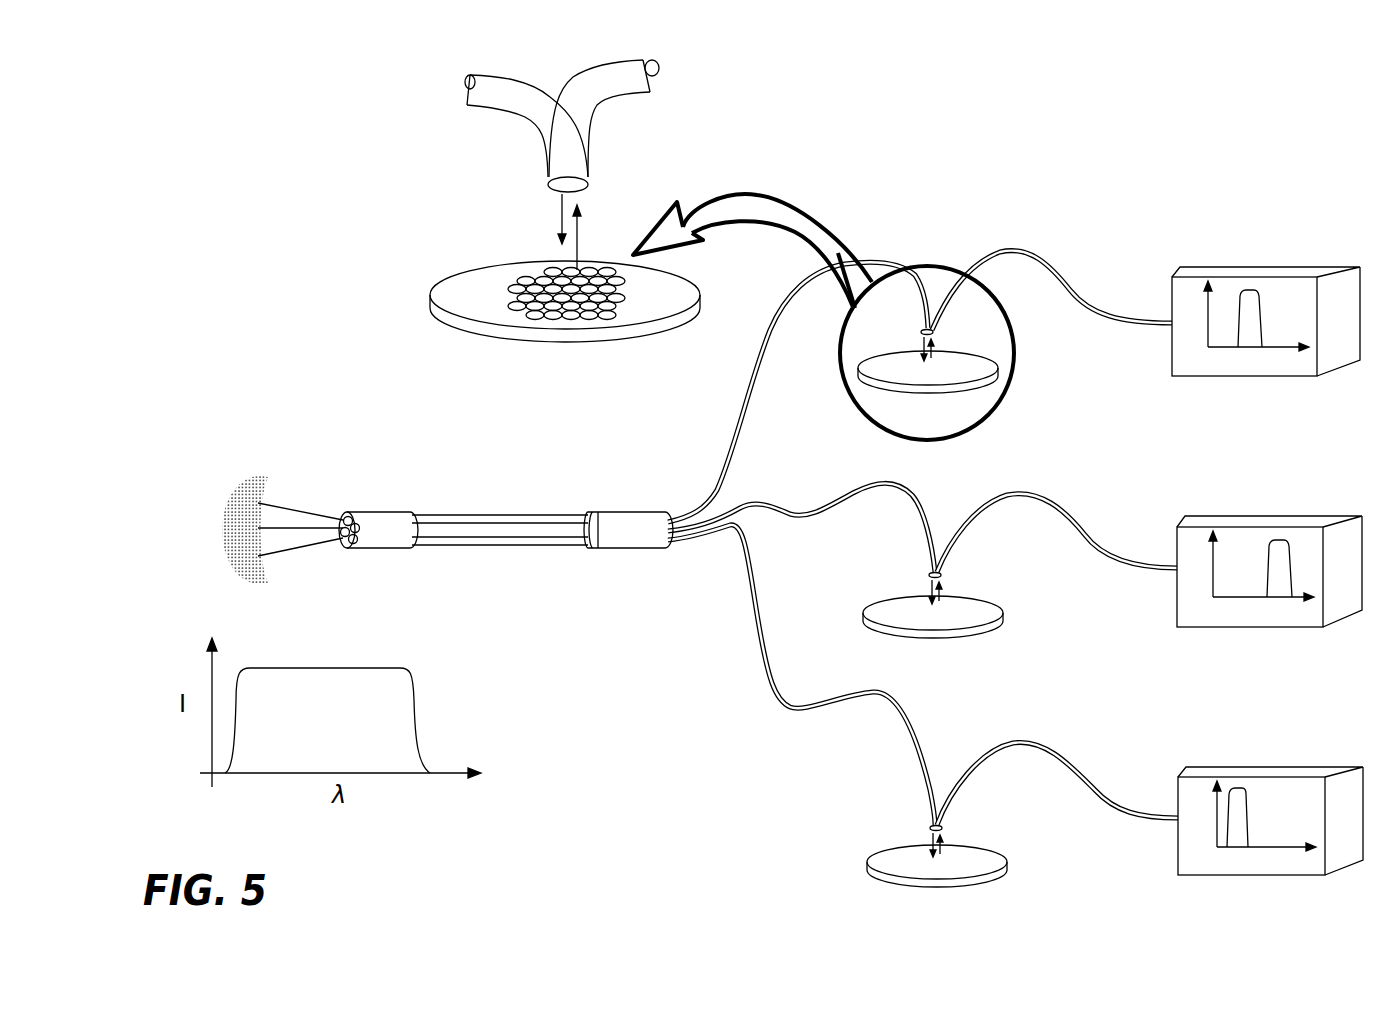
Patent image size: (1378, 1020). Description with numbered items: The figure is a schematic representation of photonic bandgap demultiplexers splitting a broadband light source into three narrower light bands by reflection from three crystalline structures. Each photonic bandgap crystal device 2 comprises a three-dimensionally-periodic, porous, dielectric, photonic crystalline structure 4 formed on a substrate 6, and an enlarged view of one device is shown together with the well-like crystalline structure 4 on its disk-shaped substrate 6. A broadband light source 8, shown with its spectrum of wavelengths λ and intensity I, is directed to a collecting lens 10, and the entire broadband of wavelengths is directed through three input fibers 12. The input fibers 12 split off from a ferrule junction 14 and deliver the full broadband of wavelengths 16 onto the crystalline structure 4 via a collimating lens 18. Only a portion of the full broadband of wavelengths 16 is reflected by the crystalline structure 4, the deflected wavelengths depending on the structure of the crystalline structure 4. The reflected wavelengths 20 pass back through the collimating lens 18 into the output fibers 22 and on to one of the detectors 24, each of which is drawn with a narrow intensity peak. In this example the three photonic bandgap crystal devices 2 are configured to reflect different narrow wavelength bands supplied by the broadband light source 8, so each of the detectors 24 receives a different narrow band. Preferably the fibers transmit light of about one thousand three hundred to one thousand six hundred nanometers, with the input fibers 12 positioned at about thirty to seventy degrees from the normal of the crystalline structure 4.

The photonic bandgap crystal device 2 is at (396, 292).
The crystalline structure 4 is at (520, 307).
The substrate 6 is at (603, 337).
The broadband light source 8 is at (308, 505).
The collecting lens 10 is at (380, 543).
The input fibers 12 is at (493, 107).
The ferrule junction 14 is at (647, 548).
The full broadband of wavelengths 16 is at (562, 220).
The collimating lens 18 is at (584, 187).
The reflected wavelengths 20 is at (578, 232).
The output fibers 22 is at (653, 60).
The detectors 24 is at (1180, 367).